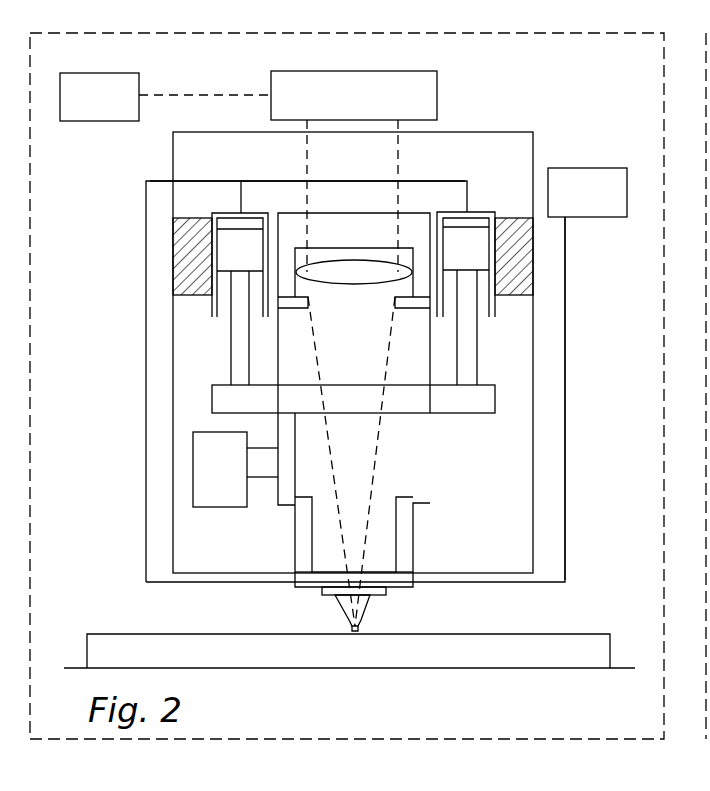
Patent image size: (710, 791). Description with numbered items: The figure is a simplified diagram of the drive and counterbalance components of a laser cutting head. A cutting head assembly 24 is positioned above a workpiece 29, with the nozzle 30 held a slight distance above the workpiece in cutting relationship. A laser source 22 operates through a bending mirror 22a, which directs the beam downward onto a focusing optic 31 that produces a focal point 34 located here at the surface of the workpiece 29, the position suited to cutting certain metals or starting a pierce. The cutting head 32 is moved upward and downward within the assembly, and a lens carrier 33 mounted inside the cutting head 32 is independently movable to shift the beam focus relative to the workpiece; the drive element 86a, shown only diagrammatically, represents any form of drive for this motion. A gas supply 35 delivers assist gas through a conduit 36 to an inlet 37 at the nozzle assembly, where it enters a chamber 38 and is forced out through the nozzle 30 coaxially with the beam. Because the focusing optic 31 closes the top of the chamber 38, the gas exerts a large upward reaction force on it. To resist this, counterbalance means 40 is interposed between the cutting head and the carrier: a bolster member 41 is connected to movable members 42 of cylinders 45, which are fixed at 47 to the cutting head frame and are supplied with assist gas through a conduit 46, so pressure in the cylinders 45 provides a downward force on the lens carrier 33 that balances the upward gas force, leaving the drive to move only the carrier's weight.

The laser source 22 is at (110, 121).
The bending mirror 22a is at (382, 71).
The cutting head assembly 24 is at (500, 96).
The workpiece 29 is at (601, 652).
The nozzle 30 is at (368, 612).
The focusing optic 31 is at (340, 283).
The cutting head 32 is at (533, 132).
The lens carrier 33 is at (277, 365).
The focal point 34 is at (357, 630).
The gas supply 35 is at (627, 188).
The conduit 36 is at (565, 452).
The inlet 37 is at (413, 577).
The chamber 38 is at (398, 466).
The counterbalance means 40 is at (133, 273).
The bolster member 41 is at (222, 398).
The movable member 42 is at (243, 330).
The cylinders 45 is at (438, 235).
The conduit 46 is at (282, 181).
The fixing 47 is at (192, 218).
The drive element 86a is at (212, 485).